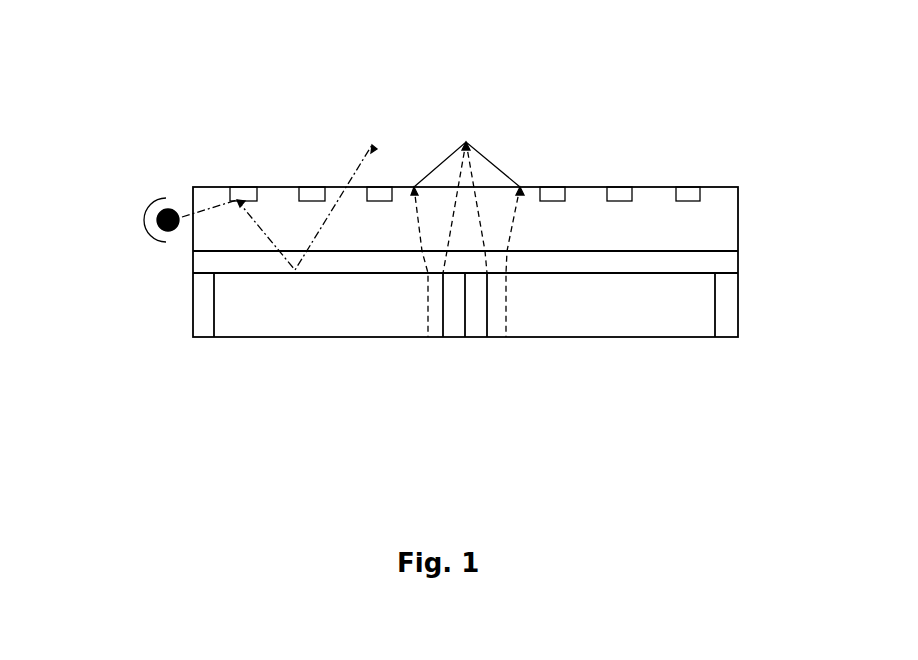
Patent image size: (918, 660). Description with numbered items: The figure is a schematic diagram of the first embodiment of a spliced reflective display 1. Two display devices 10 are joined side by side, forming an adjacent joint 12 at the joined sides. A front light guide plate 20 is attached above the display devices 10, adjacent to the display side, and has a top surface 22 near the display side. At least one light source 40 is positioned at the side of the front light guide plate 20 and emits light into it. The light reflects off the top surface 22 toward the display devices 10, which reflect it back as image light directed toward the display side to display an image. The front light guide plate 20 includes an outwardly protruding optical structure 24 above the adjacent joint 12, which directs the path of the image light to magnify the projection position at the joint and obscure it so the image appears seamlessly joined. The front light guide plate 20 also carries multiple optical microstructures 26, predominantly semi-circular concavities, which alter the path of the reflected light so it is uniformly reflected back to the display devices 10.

The spliced reflective display 1 is at (185, 132).
The display device 10 is at (332, 320).
The adjacent joint 12 is at (435, 330).
The front light guide plate 20 is at (712, 226).
The top surface 22 is at (280, 188).
The optical structure 24 is at (483, 153).
The optical microstructures 26 is at (687, 192).
The light source 40 is at (158, 237).